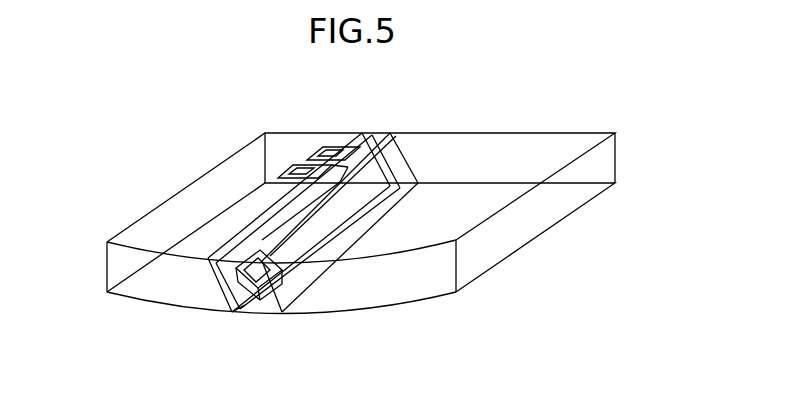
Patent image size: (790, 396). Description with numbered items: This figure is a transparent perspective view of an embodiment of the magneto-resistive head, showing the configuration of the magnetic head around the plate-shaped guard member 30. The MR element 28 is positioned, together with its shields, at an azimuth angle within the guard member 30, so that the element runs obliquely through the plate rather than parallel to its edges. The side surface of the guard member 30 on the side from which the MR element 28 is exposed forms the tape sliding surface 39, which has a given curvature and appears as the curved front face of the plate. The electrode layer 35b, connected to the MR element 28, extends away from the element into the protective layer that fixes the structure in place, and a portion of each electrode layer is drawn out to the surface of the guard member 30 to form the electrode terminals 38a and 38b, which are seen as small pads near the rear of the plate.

The guard member 30 is at (582, 197).
The tape sliding surface 39 is at (168, 297).
The electrode layer 35b is at (282, 221).
The MR element 28 is at (243, 300).
The electrode terminal 38a is at (328, 147).
The electrode terminal 38b is at (282, 172).